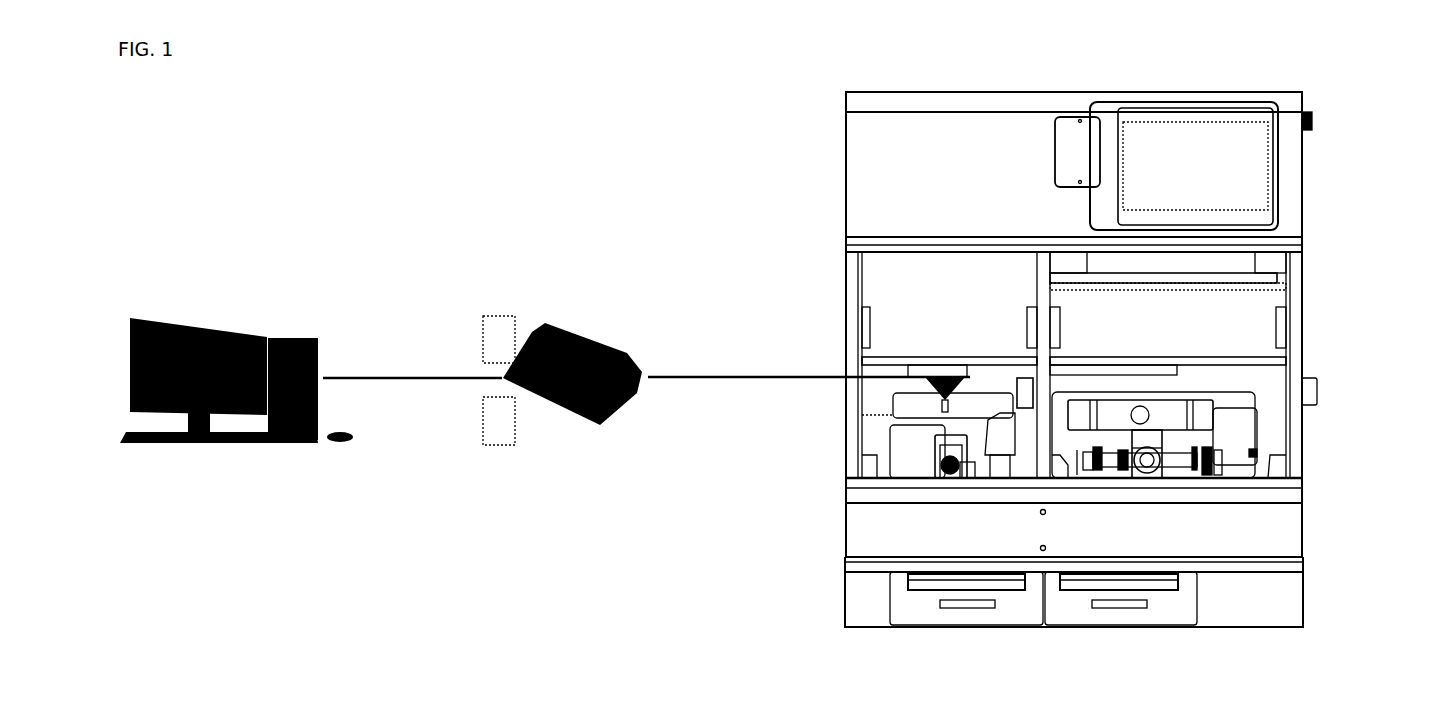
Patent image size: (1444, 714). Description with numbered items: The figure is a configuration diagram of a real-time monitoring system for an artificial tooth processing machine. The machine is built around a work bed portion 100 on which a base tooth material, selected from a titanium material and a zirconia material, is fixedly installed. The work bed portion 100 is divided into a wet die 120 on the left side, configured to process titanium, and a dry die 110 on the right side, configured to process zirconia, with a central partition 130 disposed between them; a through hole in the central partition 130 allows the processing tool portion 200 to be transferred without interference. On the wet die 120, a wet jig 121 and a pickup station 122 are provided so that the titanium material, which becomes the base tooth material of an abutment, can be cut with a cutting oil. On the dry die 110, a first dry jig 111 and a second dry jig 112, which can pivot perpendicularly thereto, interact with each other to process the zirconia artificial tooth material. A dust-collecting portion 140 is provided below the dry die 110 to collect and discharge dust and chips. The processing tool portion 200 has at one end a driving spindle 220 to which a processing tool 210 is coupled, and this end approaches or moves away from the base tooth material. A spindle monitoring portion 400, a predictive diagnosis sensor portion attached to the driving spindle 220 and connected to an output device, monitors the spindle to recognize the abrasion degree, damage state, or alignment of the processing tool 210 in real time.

The work bed portion 100 is at (836, 452).
The dry die 110 is at (1081, 359).
The first dry jig 111 is at (1210, 470).
The second dry jig 112 is at (1215, 420).
The wet die 120 is at (782, 510).
The wet jig 121 is at (945, 428).
The pickup station 122 is at (950, 480).
The central partition 130 is at (1050, 284).
The dust-collecting portion 140 is at (1172, 610).
The processing tool portion 200 is at (776, 382).
The processing tool 210 is at (893, 412).
The driving spindle 220 is at (940, 383).
The spindle monitoring portion 400 is at (580, 425).